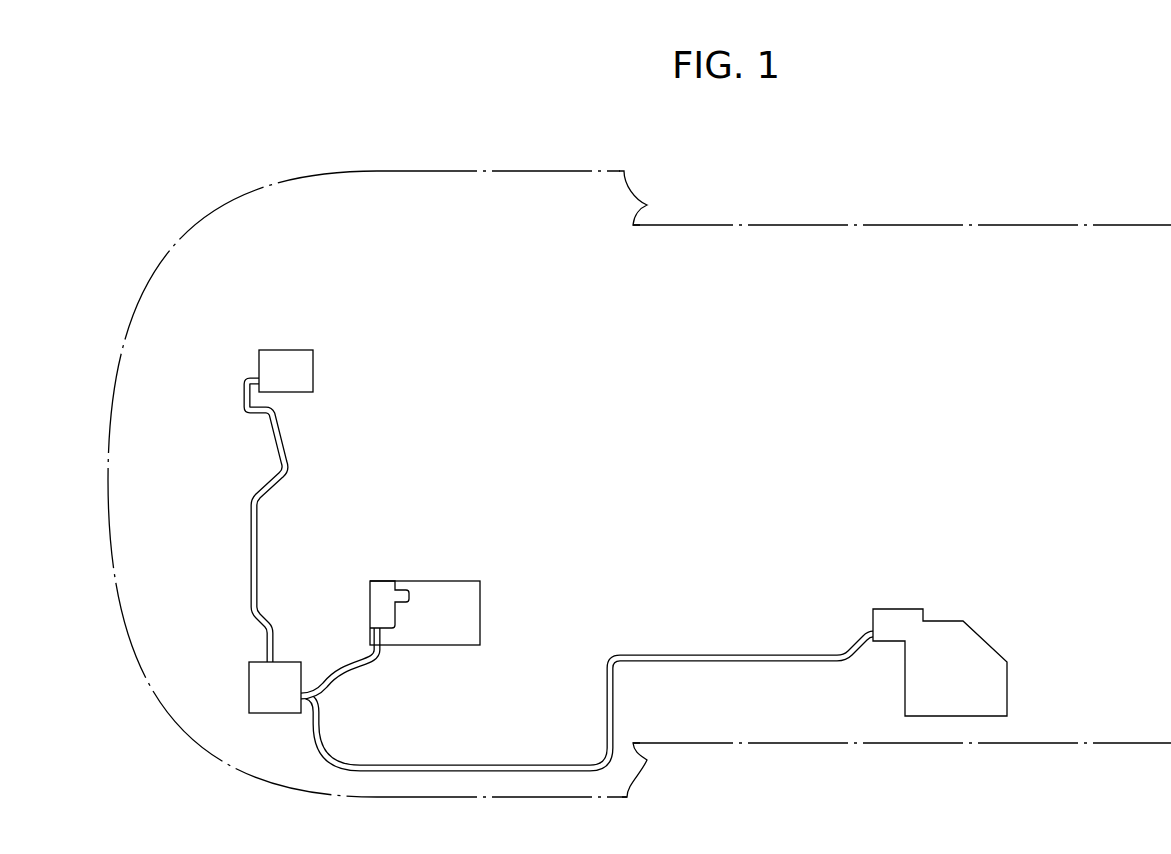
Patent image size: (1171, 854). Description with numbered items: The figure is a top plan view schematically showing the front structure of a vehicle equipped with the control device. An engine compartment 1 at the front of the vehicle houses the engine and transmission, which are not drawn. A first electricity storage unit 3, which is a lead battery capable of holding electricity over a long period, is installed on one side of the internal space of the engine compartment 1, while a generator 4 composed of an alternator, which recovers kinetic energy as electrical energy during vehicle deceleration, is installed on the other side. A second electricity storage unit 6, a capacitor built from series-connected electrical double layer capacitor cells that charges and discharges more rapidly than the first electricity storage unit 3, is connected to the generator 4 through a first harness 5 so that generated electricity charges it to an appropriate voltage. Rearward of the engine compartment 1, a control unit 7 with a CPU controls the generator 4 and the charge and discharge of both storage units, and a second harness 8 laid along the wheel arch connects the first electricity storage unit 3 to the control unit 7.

The engine compartment 1 is at (418, 439).
The first electricity storage unit 3 is at (433, 581).
The generator 4 is at (280, 350).
The first harness 5 is at (249, 545).
The second electricity storage unit 6 is at (249, 688).
The control unit 7 is at (972, 650).
The second harness 8 is at (470, 763).